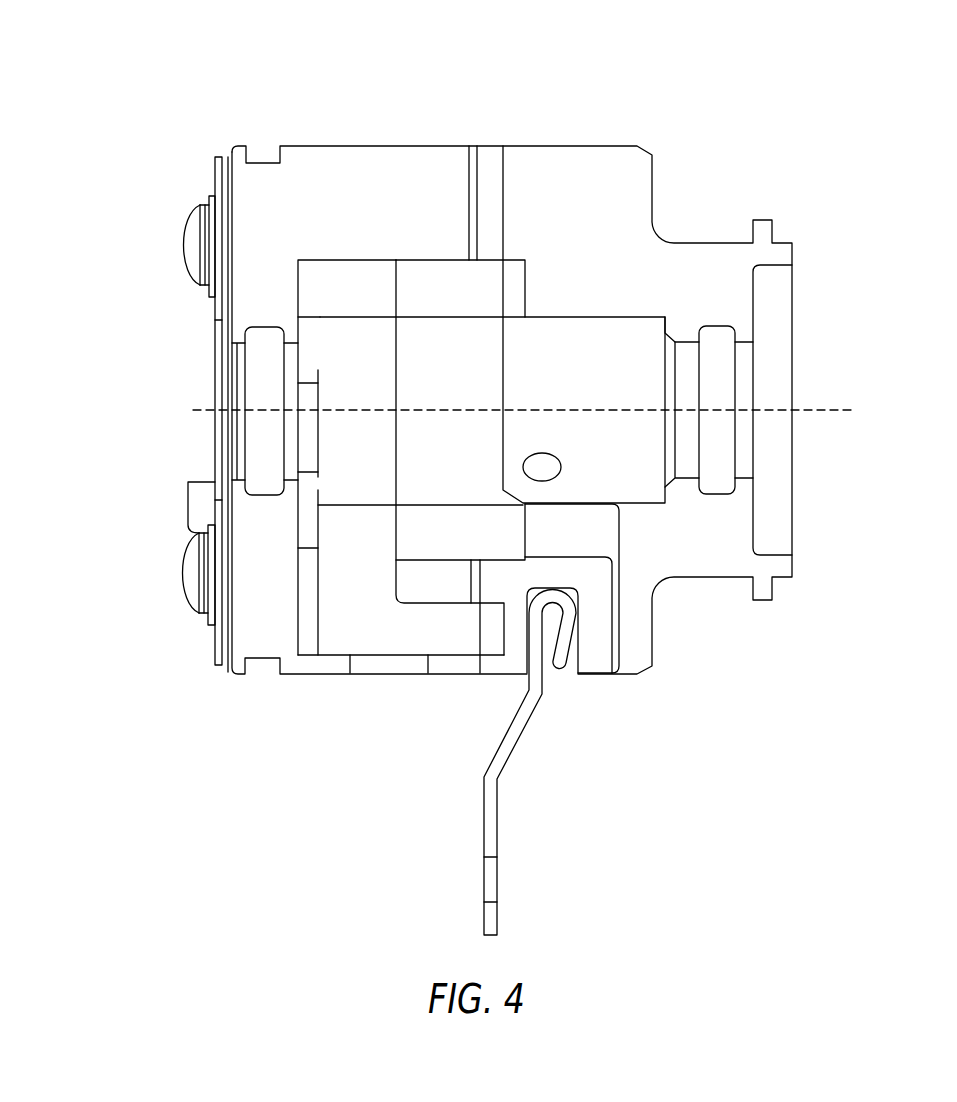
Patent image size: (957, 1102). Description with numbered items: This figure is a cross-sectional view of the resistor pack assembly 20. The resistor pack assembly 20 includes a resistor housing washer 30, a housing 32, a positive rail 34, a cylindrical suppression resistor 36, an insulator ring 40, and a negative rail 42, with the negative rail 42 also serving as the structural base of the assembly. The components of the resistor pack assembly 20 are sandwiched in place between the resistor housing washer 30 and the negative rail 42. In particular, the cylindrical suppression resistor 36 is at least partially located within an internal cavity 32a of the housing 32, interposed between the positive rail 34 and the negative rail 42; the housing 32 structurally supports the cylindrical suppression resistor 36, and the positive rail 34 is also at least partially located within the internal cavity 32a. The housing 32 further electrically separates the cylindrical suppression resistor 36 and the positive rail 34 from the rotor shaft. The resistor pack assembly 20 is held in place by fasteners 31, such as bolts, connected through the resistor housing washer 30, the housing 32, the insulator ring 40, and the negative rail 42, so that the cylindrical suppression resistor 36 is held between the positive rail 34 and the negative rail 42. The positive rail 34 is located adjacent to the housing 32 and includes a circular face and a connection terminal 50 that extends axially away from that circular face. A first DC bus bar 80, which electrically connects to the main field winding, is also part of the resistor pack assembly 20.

The resistor pack assembly 20 is at (128, 69).
The resistor housing washer 30 is at (220, 183).
The fasteners 31 is at (205, 247).
The housing 32 is at (394, 152).
The internal cavity 32a is at (347, 262).
The positive rail 34 is at (352, 622).
The cylindrical suppression resistor 36 is at (453, 280).
The insulator ring 40 is at (497, 152).
The negative rail 42 is at (684, 558).
The connection terminal 50 is at (431, 632).
The first DC bus bar 80 is at (518, 738).